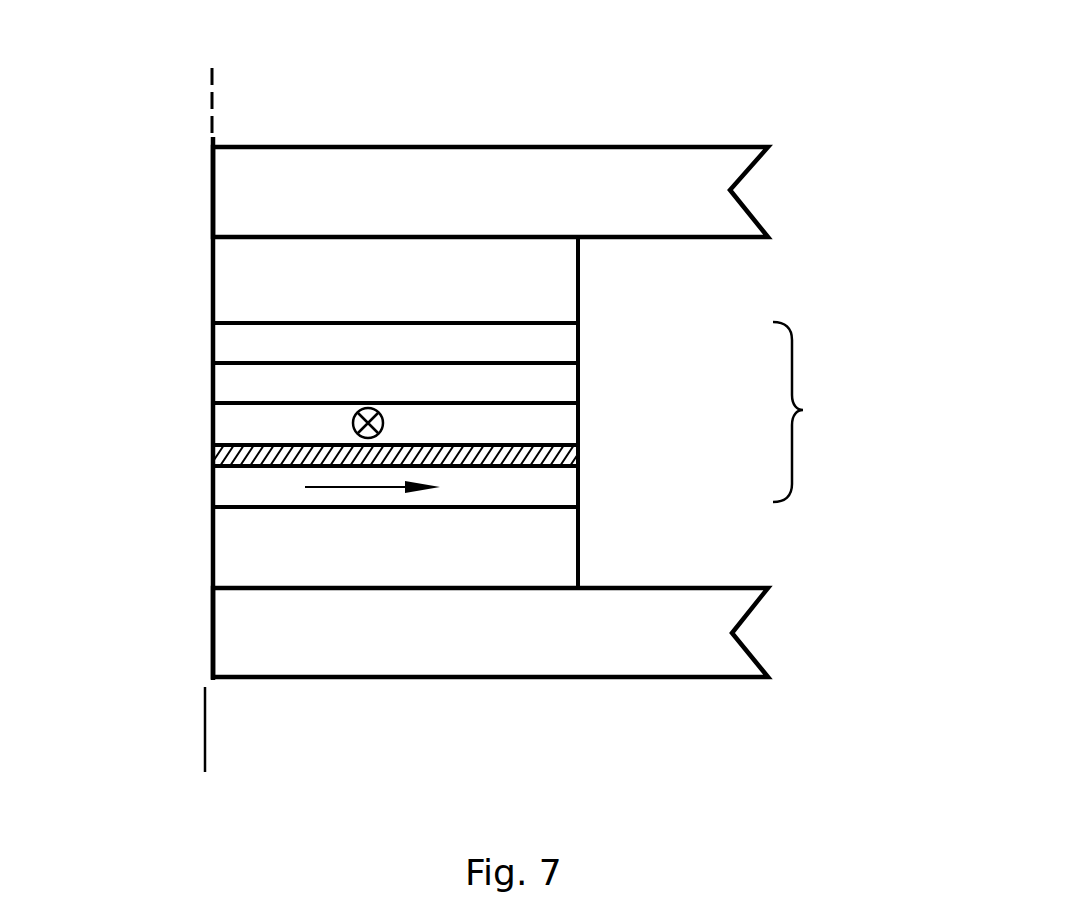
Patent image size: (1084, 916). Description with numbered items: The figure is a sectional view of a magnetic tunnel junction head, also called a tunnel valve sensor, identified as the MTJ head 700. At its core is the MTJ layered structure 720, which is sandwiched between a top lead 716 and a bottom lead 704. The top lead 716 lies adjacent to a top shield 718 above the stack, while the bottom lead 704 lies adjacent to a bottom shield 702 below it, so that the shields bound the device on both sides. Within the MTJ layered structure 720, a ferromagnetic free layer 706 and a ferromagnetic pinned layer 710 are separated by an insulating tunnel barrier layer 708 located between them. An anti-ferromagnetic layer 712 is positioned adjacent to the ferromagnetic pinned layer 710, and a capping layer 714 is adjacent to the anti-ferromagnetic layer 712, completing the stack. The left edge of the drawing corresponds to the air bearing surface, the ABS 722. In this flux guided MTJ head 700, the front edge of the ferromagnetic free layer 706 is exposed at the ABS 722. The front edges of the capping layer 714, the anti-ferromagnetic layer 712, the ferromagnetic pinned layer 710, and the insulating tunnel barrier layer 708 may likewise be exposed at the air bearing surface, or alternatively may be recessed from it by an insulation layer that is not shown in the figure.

The MTJ head 700 is at (780, 65).
The bottom shield 702 is at (735, 612).
The bottom lead 704 is at (562, 560).
The ferromagnetic free layer 706 is at (570, 486).
The insulating tunnel barrier layer 708 is at (560, 460).
The ferromagnetic pinned layer 710 is at (553, 425).
The anti-ferromagnetic layer 712 is at (555, 390).
The capping layer 714 is at (562, 350).
The top lead 716 is at (562, 285).
The top shield 718 is at (713, 215).
The MTJ layered structure 720 is at (825, 412).
The ABS 722 is at (205, 733).